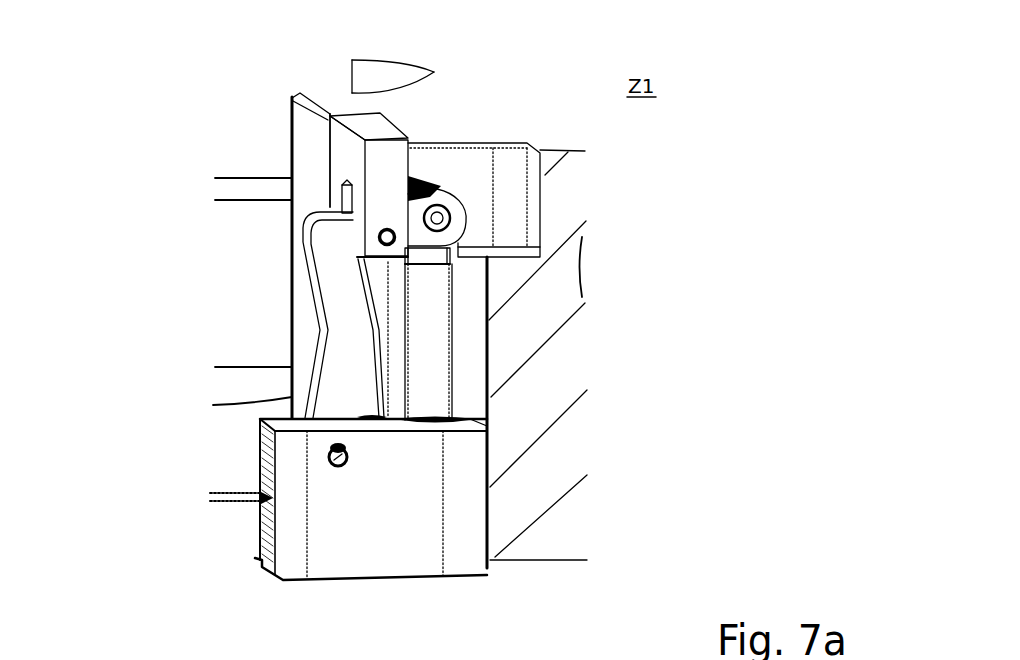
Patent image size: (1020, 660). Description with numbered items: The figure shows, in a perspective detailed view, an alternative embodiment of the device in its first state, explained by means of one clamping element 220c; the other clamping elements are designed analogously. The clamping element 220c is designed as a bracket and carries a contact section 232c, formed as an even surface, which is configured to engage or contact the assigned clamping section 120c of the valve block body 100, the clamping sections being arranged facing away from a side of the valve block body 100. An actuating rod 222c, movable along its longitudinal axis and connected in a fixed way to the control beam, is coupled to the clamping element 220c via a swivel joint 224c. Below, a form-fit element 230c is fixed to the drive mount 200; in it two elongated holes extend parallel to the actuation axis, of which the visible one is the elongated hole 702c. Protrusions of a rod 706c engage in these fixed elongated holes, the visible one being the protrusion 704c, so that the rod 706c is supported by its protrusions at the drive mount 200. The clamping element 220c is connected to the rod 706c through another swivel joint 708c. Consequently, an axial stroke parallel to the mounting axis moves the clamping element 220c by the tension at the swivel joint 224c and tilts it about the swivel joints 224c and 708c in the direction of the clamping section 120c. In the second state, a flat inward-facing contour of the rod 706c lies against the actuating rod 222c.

The clamping element 220c is at (347, 160).
The contact section 232c is at (426, 155).
The swivel joint 224c is at (441, 212).
The actuating rod 222c is at (437, 322).
The clamping section 120c is at (507, 228).
The valve block body 100 is at (568, 204).
The swivel joint 708c is at (378, 237).
The rod 706c is at (345, 294).
The form-fit element 230c is at (285, 537).
The elongated hole 702c is at (329, 446).
The protrusion 704c is at (341, 461).
The drive mount 200 is at (223, 523).